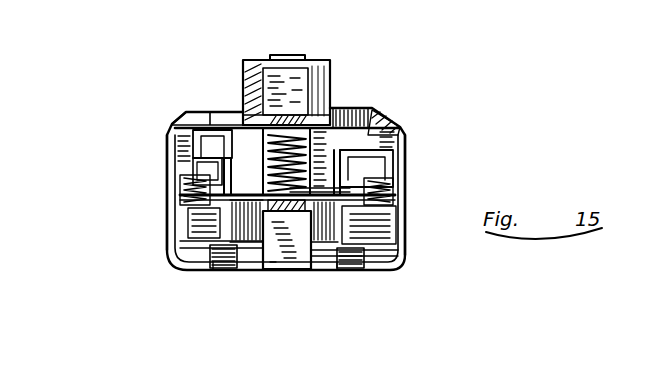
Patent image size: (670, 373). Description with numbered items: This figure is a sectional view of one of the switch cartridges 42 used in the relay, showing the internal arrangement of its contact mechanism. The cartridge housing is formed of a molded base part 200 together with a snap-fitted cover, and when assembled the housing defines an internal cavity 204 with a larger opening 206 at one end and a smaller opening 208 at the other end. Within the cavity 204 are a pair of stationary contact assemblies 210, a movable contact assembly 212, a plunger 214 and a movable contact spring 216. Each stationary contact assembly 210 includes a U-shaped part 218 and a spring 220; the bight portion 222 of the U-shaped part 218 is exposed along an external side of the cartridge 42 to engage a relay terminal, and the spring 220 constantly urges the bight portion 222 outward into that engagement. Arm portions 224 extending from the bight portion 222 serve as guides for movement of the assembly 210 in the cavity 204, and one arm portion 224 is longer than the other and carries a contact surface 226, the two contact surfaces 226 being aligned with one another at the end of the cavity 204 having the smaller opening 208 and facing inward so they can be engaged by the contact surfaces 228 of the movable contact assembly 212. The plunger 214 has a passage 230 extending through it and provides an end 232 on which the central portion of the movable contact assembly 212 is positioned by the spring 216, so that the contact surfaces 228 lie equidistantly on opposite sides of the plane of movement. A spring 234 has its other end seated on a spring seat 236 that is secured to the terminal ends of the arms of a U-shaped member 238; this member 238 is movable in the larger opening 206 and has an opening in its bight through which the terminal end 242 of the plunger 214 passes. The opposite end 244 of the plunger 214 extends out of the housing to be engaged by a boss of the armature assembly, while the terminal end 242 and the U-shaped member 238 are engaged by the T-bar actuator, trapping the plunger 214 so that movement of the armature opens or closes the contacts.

The switch cartridge 42 is at (147, 124).
The molded base part 200 is at (387, 122).
The internal cavity 204 is at (236, 272).
The larger opening 206 is at (334, 111).
The smaller opening 208 is at (352, 280).
The stationary contact assembly 210 is at (178, 222).
The movable contact assembly 212 is at (395, 238).
The plunger 214 is at (277, 272).
The movable contact spring 216 is at (258, 133).
The U-shaped part 218 is at (168, 150).
The spring 220 is at (168, 188).
The bight portion 222 is at (172, 196).
The arm portion 224 is at (193, 137).
The contact surface 226 is at (205, 265).
The contact surface 228 is at (225, 250).
The passage 230 is at (372, 110).
The end 232 is at (293, 275).
The spring 234 is at (340, 98).
The spring seat 236 is at (250, 62).
The U-shaped member 238 is at (333, 63).
The terminal end 242 is at (290, 56).
The end 244 is at (263, 273).